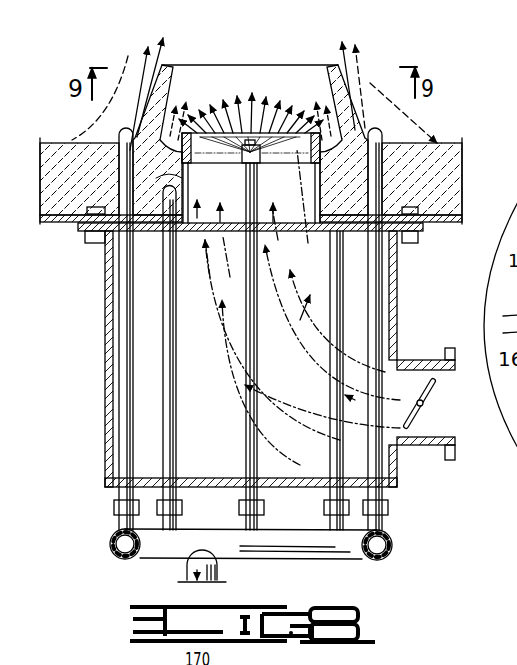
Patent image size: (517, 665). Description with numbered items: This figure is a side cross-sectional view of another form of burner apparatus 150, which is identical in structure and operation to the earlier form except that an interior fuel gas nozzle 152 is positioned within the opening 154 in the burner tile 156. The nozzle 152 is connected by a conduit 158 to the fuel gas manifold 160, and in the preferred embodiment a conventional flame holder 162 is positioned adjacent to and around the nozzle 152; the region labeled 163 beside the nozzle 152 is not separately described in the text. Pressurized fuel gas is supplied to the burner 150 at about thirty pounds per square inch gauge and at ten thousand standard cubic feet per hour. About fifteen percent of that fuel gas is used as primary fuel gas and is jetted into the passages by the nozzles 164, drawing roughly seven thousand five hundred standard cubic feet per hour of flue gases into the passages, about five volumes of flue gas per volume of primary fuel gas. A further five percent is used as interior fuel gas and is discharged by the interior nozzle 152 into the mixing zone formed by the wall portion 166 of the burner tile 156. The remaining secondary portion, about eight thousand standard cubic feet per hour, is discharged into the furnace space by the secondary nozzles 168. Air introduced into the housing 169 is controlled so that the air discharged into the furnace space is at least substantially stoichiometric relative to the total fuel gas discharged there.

The burner apparatus 150 is at (240, 60).
The interior fuel gas nozzle 152 is at (249, 166).
The opening 154 is at (318, 198).
The burner tile 156 is at (360, 133).
The conduit 158 is at (247, 412).
The fuel gas manifold 160 is at (303, 543).
The flame holder 162 is at (117, 91).
The chamber 163 is at (251, 193).
The nozzles 164 is at (137, 242).
The wall portion 166 is at (343, 52).
The secondary nozzles 168 is at (380, 132).
The housing 169 is at (112, 366).